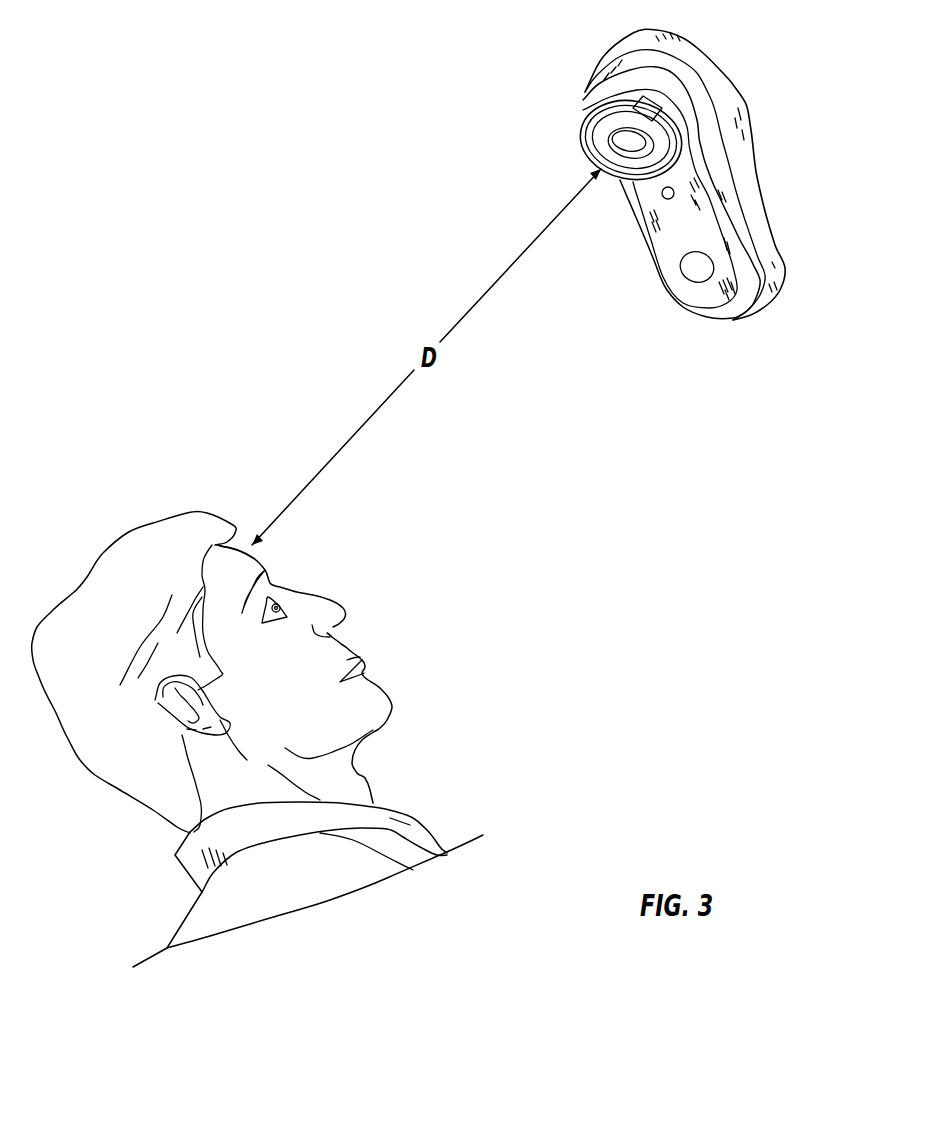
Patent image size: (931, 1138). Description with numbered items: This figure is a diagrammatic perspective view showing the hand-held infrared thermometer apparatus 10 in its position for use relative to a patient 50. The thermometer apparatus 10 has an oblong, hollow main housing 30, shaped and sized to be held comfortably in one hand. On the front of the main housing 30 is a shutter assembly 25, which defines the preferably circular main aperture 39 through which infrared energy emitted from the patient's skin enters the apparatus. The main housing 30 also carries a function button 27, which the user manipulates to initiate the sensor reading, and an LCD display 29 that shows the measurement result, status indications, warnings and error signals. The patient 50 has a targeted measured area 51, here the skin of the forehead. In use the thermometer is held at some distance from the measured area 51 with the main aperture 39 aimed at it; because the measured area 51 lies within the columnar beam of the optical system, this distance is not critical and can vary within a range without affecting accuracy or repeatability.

The thermometer apparatus 10 is at (685, 169).
The main housing 30 is at (703, 57).
The shutter assembly 25 is at (581, 134).
The main aperture 39 is at (629, 143).
The function button 27 is at (662, 197).
The LCD display 29 is at (695, 272).
The patient 50 is at (466, 730).
The measured area 51 is at (253, 553).